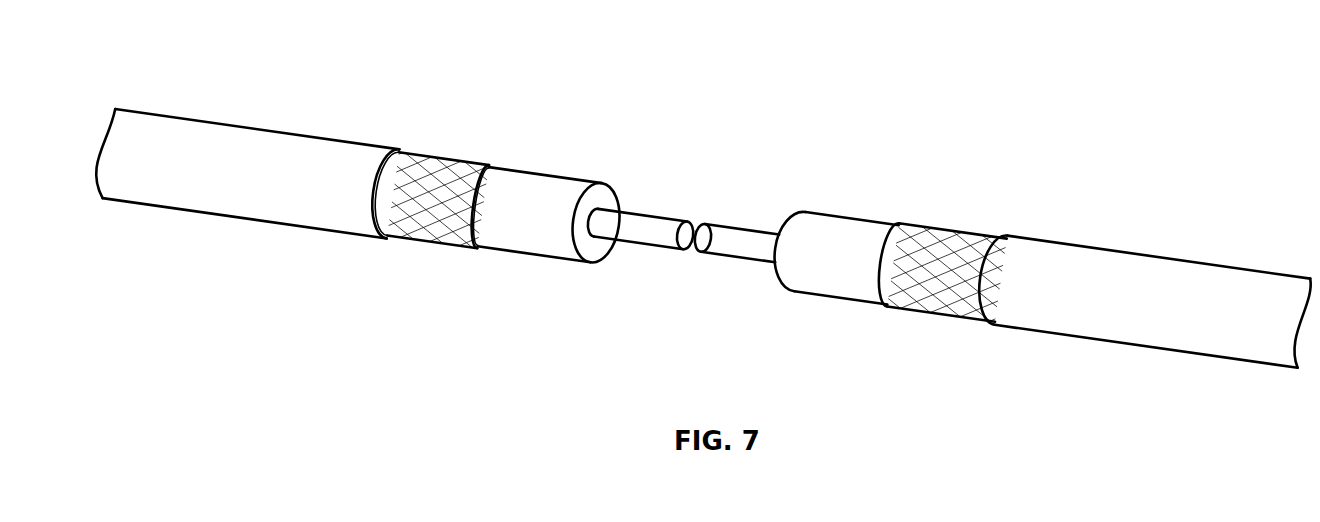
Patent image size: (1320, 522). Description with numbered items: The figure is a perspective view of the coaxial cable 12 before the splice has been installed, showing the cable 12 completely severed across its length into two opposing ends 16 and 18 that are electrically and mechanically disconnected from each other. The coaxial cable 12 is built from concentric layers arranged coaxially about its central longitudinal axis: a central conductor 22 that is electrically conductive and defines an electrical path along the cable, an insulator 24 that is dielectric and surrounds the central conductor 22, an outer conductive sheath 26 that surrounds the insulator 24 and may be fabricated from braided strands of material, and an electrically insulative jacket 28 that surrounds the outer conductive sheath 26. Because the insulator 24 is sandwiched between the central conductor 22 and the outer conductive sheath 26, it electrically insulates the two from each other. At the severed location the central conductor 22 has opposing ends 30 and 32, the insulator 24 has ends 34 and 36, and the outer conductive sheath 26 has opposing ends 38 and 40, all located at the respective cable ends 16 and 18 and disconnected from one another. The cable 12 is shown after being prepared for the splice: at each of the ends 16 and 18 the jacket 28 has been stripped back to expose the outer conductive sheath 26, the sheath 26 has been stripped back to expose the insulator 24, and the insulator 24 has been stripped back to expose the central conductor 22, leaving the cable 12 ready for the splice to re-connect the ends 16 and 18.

The coaxial cable 12 is at (284, 234).
The end of the coaxial cable 16 is at (772, 331).
The end of the coaxial cable 18 is at (542, 124).
The central conductor 22 is at (633, 244).
The insulator 24 is at (533, 256).
The outer conductive sheath 26 is at (457, 247).
The jacket 28 is at (232, 125).
The end of the central conductor 30 is at (742, 216).
The end of the central conductor 32 is at (641, 201).
The end of the insulator 34 is at (856, 208).
The end of the insulator 36 is at (553, 269).
The end of the outer conductive sheath 38 is at (928, 327).
The end of the outer conductive sheath 40 is at (447, 148).